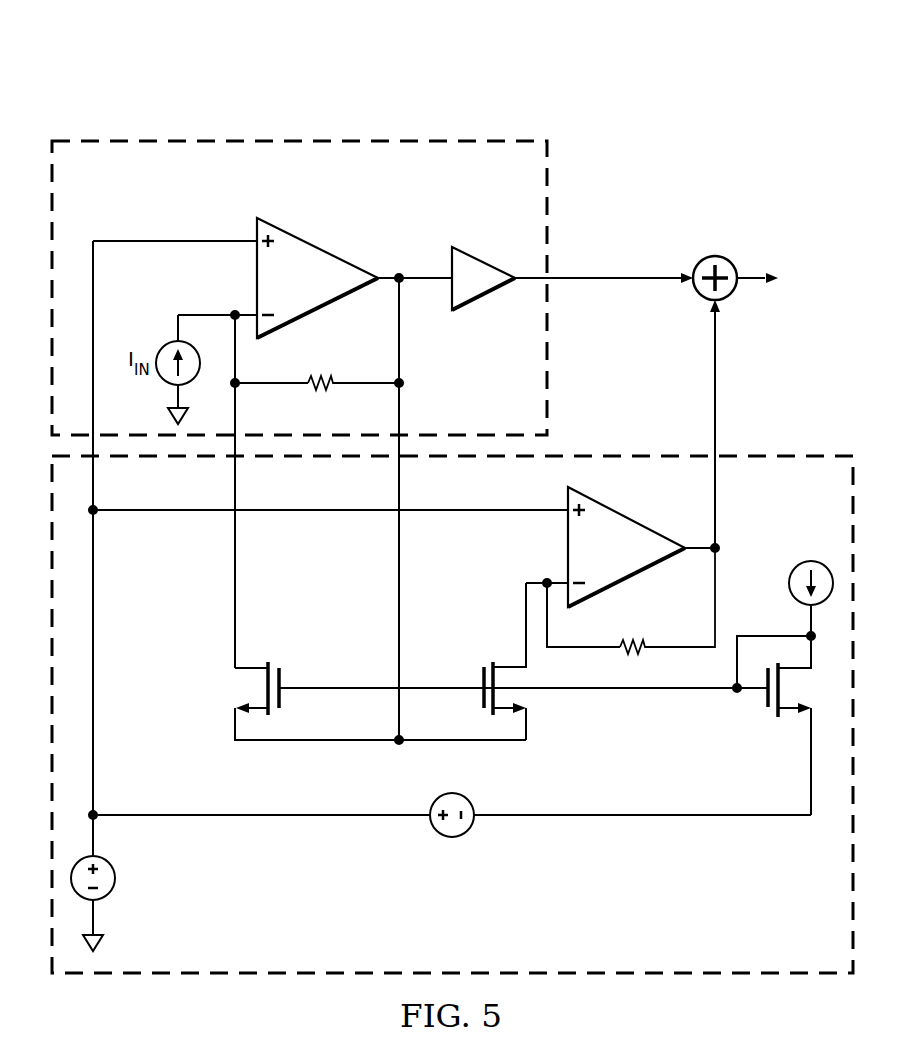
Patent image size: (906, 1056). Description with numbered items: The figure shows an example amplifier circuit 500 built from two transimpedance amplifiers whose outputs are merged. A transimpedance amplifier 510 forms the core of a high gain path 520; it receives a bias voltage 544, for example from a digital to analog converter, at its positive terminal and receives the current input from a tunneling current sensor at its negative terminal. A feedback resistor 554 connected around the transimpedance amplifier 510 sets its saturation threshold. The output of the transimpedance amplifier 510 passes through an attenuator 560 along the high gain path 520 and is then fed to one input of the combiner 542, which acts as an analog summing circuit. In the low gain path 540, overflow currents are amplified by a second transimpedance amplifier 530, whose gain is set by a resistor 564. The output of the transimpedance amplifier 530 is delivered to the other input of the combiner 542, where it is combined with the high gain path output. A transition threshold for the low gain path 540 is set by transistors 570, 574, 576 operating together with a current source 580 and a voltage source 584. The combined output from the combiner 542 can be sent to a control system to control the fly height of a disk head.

The amplifier circuit 500 is at (772, 90).
The transimpedance amplifier 510 is at (318, 247).
The high gain path 520 is at (131, 136).
The transimpedance amplifier 530 is at (630, 519).
The low gain path 540 is at (745, 984).
The combiner 542 is at (723, 258).
The bias voltage 544 is at (108, 893).
The feedback resistor 554 is at (321, 378).
The attenuator 560 is at (488, 264).
The resistor 564 is at (635, 642).
The transistor 570 is at (281, 700).
The transistor 574 is at (482, 700).
The transistor 576 is at (765, 700).
The current source 580 is at (795, 568).
The voltage source 584 is at (453, 838).